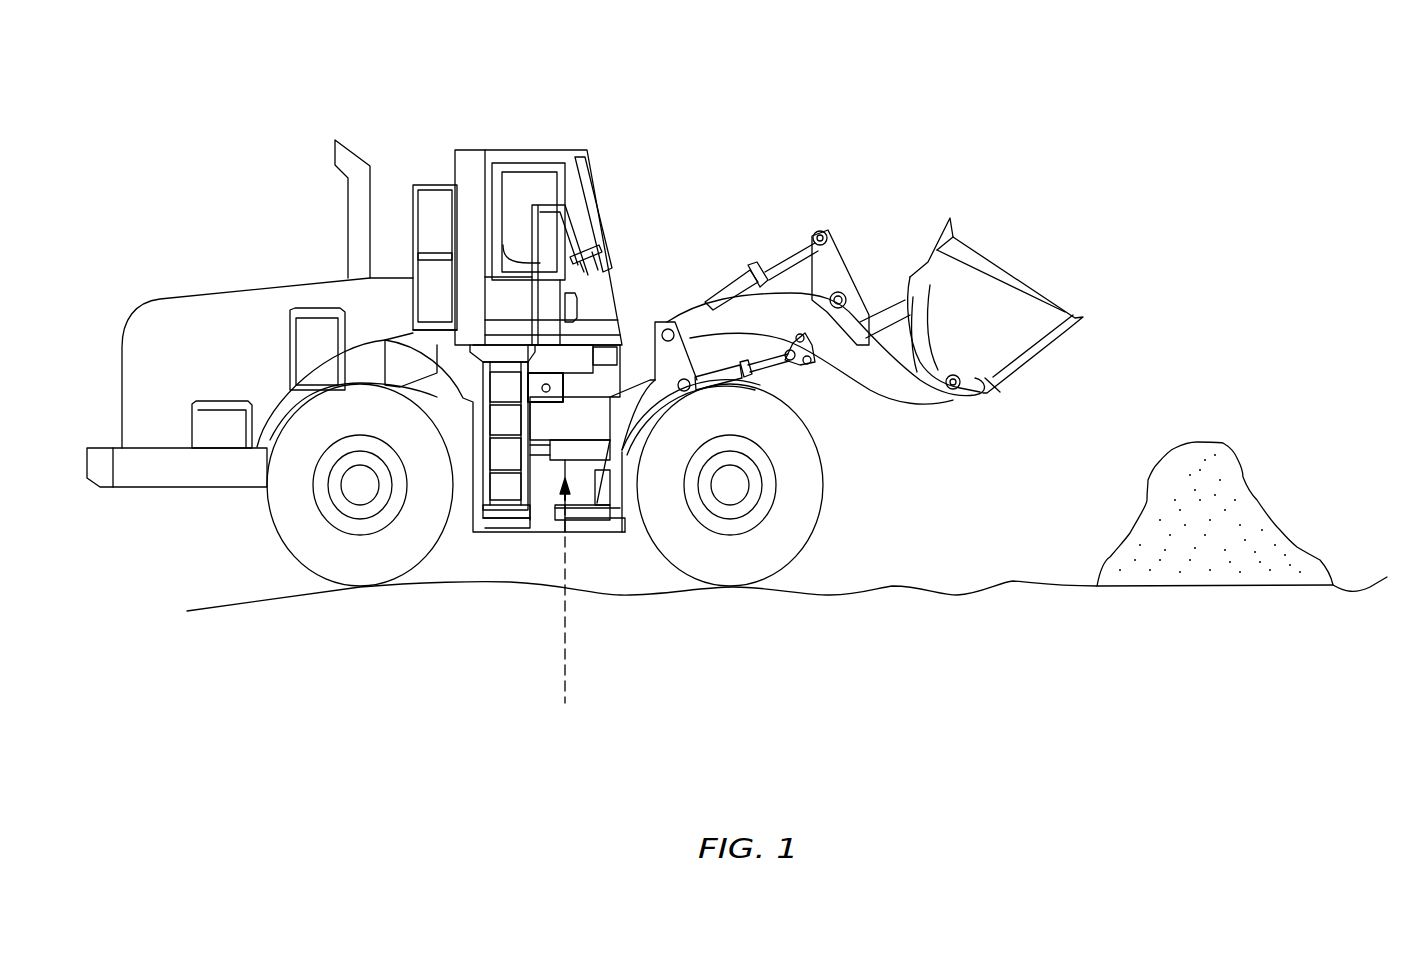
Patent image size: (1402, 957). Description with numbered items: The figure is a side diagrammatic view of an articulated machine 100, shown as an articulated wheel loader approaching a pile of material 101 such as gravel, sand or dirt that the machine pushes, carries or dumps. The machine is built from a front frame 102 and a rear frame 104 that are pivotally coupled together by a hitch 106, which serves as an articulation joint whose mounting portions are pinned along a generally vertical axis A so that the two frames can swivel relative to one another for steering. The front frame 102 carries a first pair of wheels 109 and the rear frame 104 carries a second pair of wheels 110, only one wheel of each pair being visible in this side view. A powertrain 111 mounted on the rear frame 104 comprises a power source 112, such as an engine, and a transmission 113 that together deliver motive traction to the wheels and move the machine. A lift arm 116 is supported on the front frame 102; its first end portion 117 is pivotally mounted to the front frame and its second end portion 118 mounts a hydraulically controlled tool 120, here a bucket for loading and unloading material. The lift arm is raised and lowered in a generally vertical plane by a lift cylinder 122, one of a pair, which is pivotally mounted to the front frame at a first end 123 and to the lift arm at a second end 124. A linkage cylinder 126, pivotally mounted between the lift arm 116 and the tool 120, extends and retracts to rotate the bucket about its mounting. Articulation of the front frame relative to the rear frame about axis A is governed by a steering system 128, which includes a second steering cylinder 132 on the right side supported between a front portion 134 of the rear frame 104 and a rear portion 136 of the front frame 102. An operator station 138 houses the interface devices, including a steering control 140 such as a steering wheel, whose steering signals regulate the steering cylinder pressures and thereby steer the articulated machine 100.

The articulated machine 100 is at (912, 133).
The pile of material 101 is at (1205, 445).
The front frame 102 is at (608, 525).
The rear frame 104 is at (178, 475).
The hitch 106 is at (560, 530).
The first pair of wheels 109 is at (737, 570).
The second pair of wheels 110 is at (367, 577).
The powertrain 111 is at (180, 357).
The power source 112 is at (328, 352).
The transmission 113 is at (237, 438).
The lift arm 116 is at (886, 388).
The first end portion 117 is at (663, 322).
The second end portion 118 is at (950, 392).
The tool 120 is at (1032, 348).
The lift cylinder 122 is at (718, 368).
The first end 123 is at (652, 372).
The second end 124 is at (808, 368).
The linkage cylinder 126 is at (757, 265).
The steering system 128 is at (555, 530).
The second steering cylinder 132 is at (583, 458).
The front portion 134 is at (535, 525).
The rear portion 136 is at (585, 490).
The operator station 138 is at (470, 157).
The steering control 140 is at (597, 240).